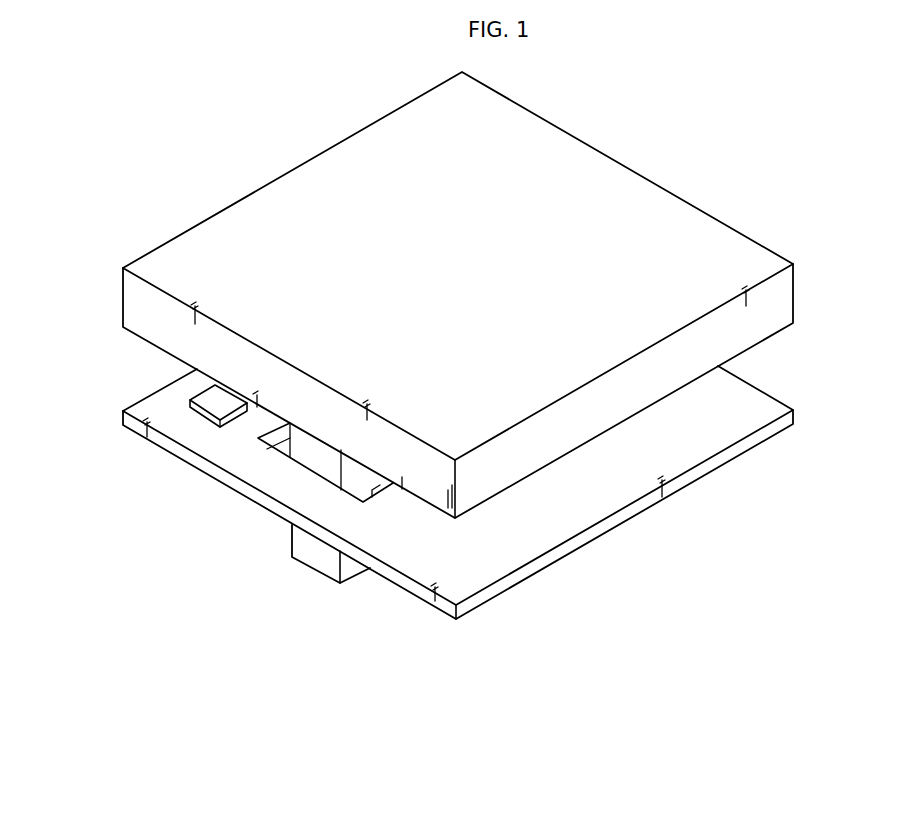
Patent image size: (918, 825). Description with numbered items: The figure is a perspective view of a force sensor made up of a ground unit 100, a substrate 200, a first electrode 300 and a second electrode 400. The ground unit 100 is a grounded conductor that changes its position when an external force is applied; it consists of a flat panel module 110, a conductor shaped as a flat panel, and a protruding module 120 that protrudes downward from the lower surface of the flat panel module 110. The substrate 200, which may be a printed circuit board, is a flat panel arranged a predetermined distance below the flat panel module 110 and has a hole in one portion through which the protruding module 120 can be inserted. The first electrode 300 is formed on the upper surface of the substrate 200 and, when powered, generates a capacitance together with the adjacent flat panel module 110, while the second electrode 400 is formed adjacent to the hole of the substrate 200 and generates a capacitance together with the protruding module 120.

The ground unit 100 is at (458, 412).
The flat panel module 110 is at (420, 482).
The protruding module 120 is at (318, 550).
The substrate 200 is at (172, 407).
The first electrode 300 is at (200, 415).
The second electrode 400 is at (377, 487).